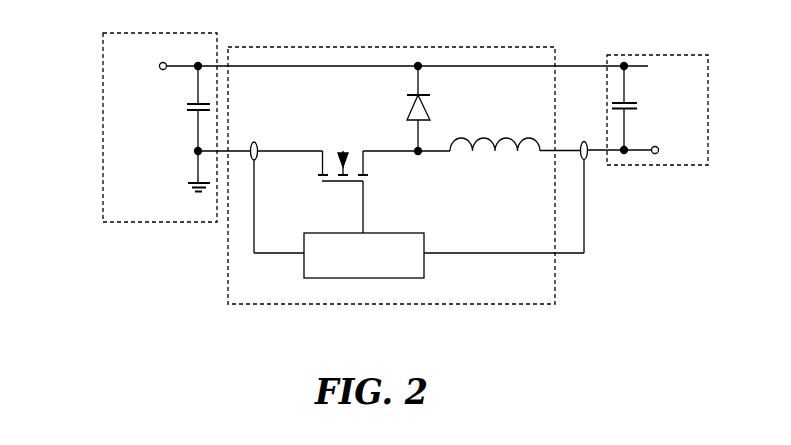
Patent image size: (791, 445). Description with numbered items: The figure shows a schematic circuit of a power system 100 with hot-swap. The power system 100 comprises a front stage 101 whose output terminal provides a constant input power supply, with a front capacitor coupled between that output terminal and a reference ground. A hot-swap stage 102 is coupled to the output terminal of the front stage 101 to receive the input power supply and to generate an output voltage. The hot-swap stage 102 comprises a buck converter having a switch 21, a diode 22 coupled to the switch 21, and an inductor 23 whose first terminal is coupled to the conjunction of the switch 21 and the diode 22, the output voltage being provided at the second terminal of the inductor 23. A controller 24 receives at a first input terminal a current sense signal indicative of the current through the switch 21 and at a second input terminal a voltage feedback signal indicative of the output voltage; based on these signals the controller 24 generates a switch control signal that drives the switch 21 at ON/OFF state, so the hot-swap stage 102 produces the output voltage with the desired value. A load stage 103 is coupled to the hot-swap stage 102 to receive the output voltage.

The power system 100 is at (97, 53).
The front stage 101 is at (156, 206).
The hot-swap stage 102 is at (533, 293).
The load stage 103 is at (701, 85).
The switch 21 is at (338, 147).
The diode 22 is at (433, 103).
The inductor 23 is at (497, 135).
The controller 24 is at (407, 230).